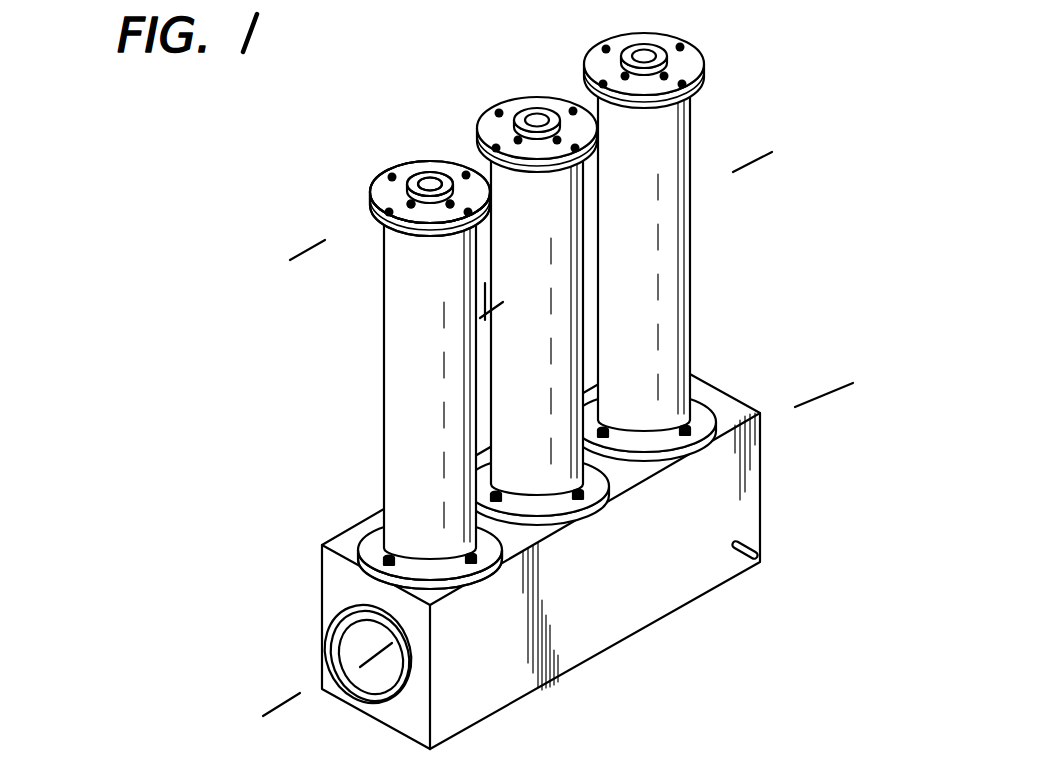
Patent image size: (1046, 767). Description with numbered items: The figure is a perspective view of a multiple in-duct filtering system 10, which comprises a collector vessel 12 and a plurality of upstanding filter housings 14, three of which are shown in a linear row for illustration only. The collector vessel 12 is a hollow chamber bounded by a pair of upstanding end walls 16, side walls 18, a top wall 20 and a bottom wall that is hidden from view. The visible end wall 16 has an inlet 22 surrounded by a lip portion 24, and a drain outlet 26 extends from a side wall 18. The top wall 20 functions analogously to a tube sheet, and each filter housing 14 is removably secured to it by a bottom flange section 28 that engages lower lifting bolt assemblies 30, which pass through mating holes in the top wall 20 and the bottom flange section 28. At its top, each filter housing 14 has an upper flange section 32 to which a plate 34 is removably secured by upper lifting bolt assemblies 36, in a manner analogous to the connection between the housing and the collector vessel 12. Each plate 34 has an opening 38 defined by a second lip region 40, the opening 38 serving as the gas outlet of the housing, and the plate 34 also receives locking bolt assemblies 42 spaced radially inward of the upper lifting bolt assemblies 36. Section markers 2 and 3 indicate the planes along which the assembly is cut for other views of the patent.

The multiple in-duct filtering system 10 is at (243, 430).
The collector vessel 12 is at (543, 560).
The filter housings 14 is at (481, 298).
The end walls 16 is at (403, 722).
The side walls 18 is at (497, 698).
The top wall 20 is at (345, 542).
The inlet 22 is at (360, 657).
The lip portion 24 is at (331, 630).
The drain outlet 26 is at (757, 544).
The bottom flange section 28 is at (372, 528).
The lower lifting bolt assemblies 30 is at (476, 566).
The upper flange section 32 is at (370, 228).
The plate 34 is at (380, 193).
The upper lifting bolt assemblies 36 is at (393, 177).
The opening 38 is at (427, 181).
The second lip region 40 is at (408, 183).
The locking bolt assemblies 42 is at (450, 208).
The section line 2- 2 is at (290, 252).
The section line 3- 3 is at (847, 385).